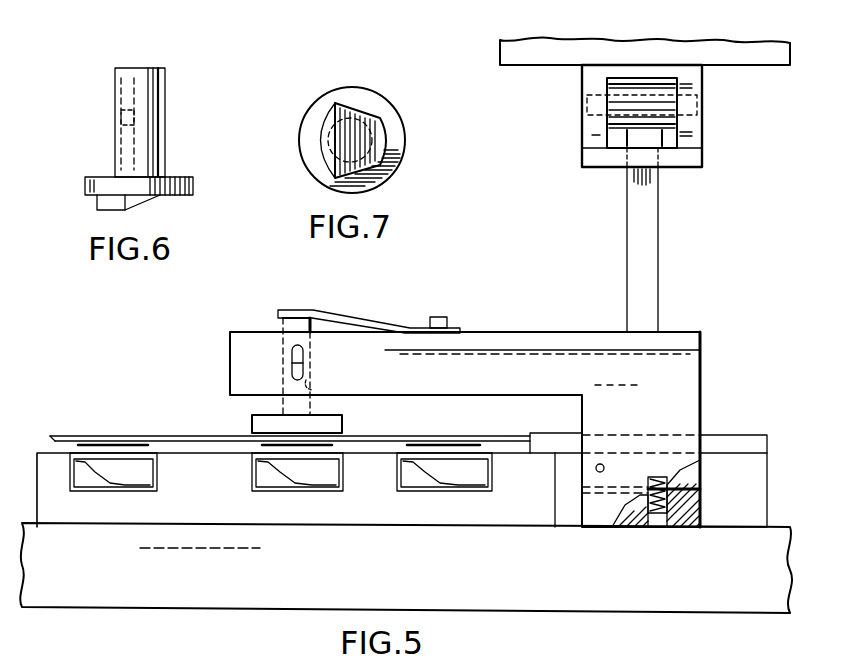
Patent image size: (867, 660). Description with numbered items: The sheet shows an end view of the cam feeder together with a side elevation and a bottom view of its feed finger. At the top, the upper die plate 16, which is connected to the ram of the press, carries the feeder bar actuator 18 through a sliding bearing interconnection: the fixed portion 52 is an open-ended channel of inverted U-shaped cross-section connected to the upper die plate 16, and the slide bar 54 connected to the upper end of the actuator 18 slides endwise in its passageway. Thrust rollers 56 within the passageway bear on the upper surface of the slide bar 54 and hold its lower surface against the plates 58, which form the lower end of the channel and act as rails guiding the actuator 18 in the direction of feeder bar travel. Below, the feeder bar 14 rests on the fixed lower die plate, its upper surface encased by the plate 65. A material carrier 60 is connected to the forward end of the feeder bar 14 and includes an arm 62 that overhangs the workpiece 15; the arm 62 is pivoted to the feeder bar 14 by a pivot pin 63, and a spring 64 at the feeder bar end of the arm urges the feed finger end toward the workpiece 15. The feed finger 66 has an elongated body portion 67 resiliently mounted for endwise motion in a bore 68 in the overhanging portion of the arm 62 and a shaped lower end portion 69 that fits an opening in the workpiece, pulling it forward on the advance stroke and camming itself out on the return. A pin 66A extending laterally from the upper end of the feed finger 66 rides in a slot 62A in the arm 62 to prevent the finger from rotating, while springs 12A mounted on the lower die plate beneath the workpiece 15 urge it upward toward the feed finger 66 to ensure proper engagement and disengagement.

In FIG. 5, the spring 12A is at (126, 478).
In FIG. 5, the feeder bar 14 is at (676, 521).
In FIG. 5, the workpiece 15 is at (381, 437).
In FIG. 5, the upper die plate 16 is at (670, 48).
In FIG. 5, the feeder bar actuator 18 is at (659, 248).
In FIG. 5, the fixed portion of the interconnection 52 is at (590, 90).
In FIG. 5, the slide bar 54 is at (624, 133).
In FIG. 5, the thrust rollers 56 is at (660, 103).
In FIG. 5, the plates 58 is at (696, 161).
In FIG. 5, the material carrier 60 is at (506, 411).
In FIG. 5, the arm 62 is at (514, 345).
In FIG. 5, the slot 62A is at (305, 355).
In FIG. 5, the pivot pin 63 is at (604, 468).
In FIG. 5, the spring 64 is at (643, 527).
In FIG. 5, the plate 65 is at (738, 441).
In FIG. 6, the feed finger 66 is at (180, 147).
In FIG. 7, the feed finger 66 is at (410, 154).
In FIG. 5, the feed finger 66 is at (262, 318).
In FIG. 5, the pin 66A is at (290, 360).
In FIG. 6, the elongated body portion 67 is at (160, 83).
In FIG. 7, the elongated body portion 67 is at (365, 124).
In FIG. 5, the bore 68 is at (312, 380).
In FIG. 6, the shaped lower end portion 69 is at (192, 181).
In FIG. 7, the shaped lower end portion 69 is at (358, 93).